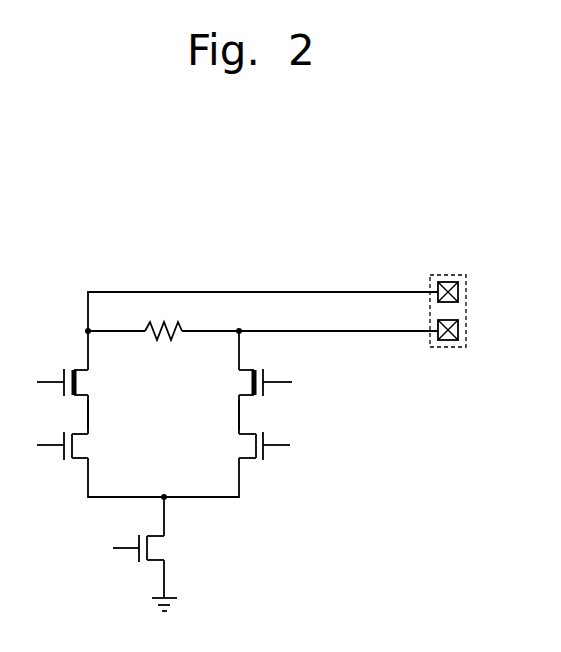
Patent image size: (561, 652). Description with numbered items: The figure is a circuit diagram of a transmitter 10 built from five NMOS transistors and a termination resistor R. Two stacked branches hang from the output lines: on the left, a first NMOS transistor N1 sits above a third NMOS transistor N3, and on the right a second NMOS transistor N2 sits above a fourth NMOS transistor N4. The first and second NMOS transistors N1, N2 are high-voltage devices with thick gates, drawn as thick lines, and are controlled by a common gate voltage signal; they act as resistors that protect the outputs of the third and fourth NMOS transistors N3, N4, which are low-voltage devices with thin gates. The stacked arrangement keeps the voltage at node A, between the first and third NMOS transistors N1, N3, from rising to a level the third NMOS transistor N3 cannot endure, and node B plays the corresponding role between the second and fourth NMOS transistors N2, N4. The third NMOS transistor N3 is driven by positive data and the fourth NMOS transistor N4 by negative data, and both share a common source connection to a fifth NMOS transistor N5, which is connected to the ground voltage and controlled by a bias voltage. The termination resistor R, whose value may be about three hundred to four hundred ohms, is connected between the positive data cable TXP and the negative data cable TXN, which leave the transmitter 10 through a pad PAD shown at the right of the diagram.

The transmitter 10 is at (508, 211).
The termination resistor R is at (163, 318).
The first NMOS transistor N1 is at (64, 384).
The second NMOS transistor N2 is at (263, 384).
The third NMOS transistor N3 is at (64, 446).
The fourth NMOS transistor N4 is at (264, 446).
The fifth NMOS transistor N5 is at (122, 548).
The node A is at (89, 412).
The node B is at (239, 412).
The pad PAD is at (452, 347).
The negative data cable TXN is at (470, 293).
The positive data cable TXP is at (470, 331).